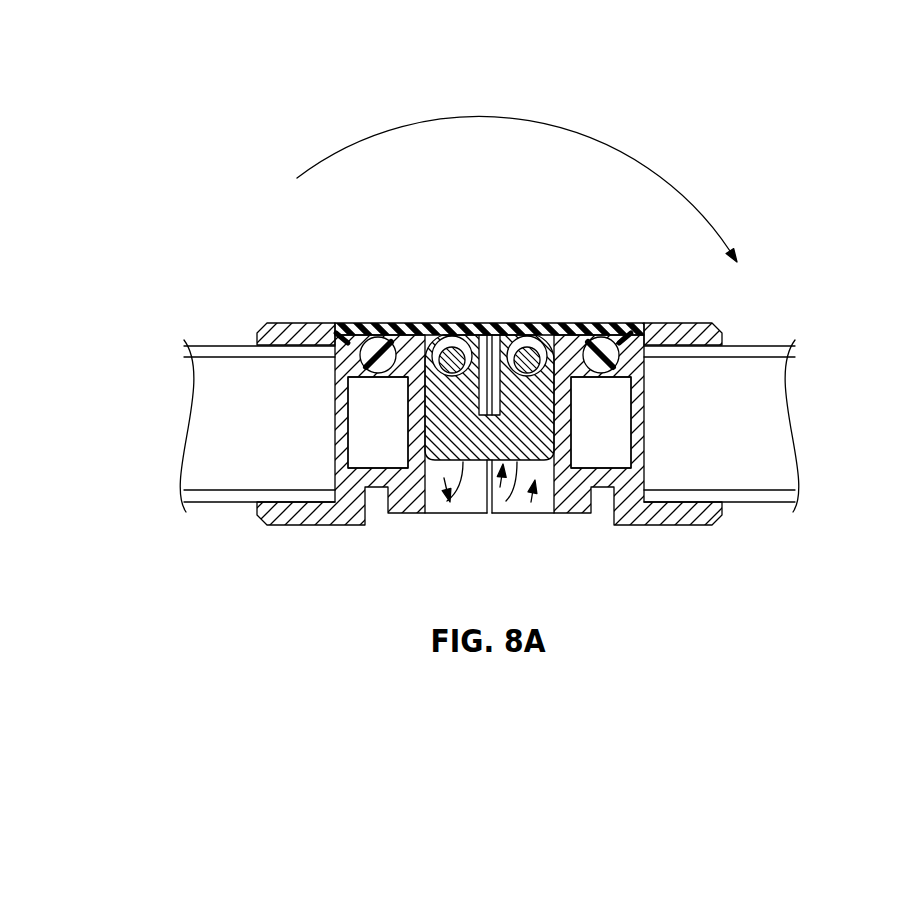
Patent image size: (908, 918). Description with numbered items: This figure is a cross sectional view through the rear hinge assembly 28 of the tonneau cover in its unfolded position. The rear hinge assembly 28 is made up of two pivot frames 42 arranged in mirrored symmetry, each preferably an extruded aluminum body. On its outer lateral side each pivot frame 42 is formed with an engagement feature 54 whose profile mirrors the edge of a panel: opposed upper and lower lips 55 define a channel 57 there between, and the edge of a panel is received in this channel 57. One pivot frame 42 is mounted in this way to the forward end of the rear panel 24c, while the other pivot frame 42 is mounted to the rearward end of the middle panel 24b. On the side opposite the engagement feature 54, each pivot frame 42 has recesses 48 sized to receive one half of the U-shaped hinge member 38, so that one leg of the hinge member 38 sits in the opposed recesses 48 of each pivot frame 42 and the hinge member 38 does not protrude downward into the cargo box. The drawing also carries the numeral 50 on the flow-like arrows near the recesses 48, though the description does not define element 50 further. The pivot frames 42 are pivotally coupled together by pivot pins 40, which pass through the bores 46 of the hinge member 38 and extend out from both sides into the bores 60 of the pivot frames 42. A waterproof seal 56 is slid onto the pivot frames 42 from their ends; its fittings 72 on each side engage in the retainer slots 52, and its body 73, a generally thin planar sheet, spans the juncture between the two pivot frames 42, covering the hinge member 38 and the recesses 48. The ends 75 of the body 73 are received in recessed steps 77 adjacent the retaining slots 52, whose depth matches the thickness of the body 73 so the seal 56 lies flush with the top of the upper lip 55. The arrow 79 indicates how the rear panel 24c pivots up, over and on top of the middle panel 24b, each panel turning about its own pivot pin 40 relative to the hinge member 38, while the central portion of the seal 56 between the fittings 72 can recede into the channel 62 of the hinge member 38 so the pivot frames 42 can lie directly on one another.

The arrow 79 is at (487, 118).
The rear hinge assembly 28 is at (247, 218).
The rear panel 24c is at (194, 328).
The middle panel 24b is at (781, 328).
The engagement feature 54 is at (222, 429).
The upper and lower lips 55 is at (285, 323).
The retainer slots 52 is at (340, 337).
The pivot frame 42 is at (304, 538).
The channel 57 is at (336, 425).
The seal 56 is at (407, 312).
The ends of the seal body 75 is at (357, 326).
The recessed steps 77 is at (617, 333).
The fittings 72 is at (380, 336).
The pivot pin 40 is at (520, 330).
The bore of the hinge member 46 is at (434, 331).
The bore of the pivot frame 60 is at (545, 331).
The body of the seal 73 is at (448, 332).
The channel of the hinge member 62 is at (505, 398).
The hinge member 38 is at (502, 514).
The recesses 48 is at (472, 502).
The flow passage 50 is at (386, 448).